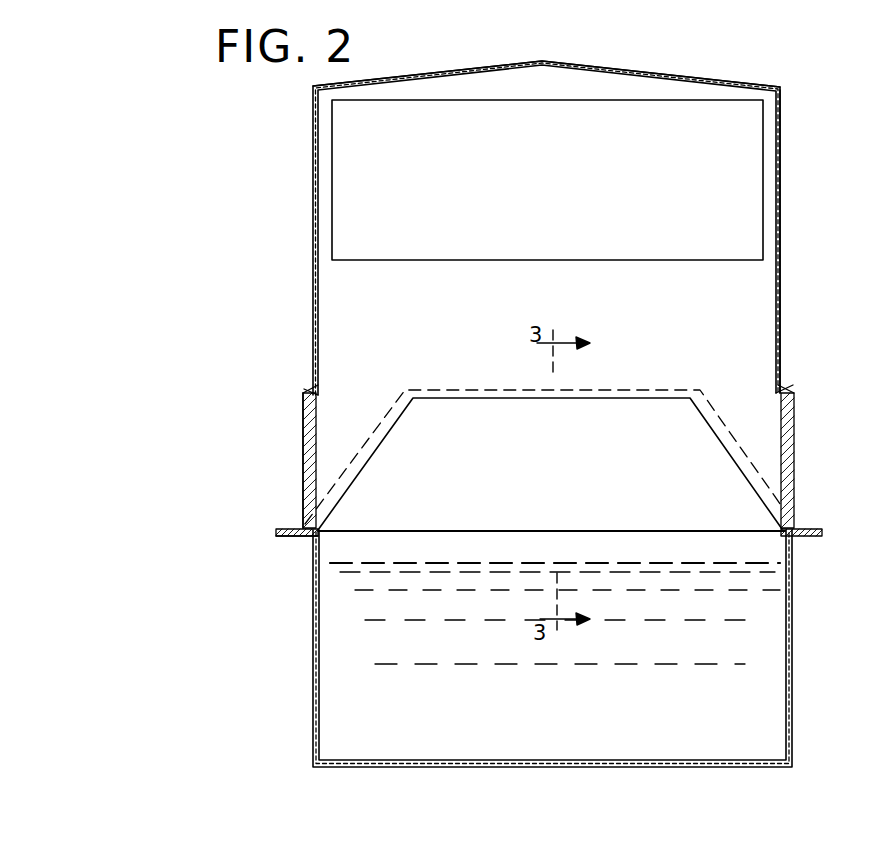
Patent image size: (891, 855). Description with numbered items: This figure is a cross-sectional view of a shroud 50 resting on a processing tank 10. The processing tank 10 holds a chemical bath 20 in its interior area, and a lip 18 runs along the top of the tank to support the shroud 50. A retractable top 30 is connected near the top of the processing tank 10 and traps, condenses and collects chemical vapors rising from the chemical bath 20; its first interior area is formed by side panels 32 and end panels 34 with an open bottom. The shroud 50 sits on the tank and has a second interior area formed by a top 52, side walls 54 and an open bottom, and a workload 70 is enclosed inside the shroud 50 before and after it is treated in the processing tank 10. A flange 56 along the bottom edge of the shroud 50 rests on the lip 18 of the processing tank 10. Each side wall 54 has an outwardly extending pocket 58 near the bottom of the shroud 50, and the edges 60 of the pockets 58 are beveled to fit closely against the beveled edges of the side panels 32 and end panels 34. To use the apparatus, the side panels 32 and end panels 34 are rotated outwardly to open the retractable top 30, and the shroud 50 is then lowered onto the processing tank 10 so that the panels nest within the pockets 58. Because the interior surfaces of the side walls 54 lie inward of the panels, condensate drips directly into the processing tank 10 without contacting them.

The processing tank 10 is at (304, 656).
The lip 18 is at (290, 537).
The chemical bath 20 is at (747, 655).
The retractable top 30 is at (750, 456).
The side panels 32 is at (367, 513).
The end panels 34 is at (302, 480).
The shroud 50 is at (310, 253).
The top 52 is at (648, 68).
The side walls 54 is at (782, 262).
The flange 56 is at (282, 529).
The pocket 58 is at (290, 444).
The edges 60 is at (307, 390).
The workload 70 is at (370, 176).